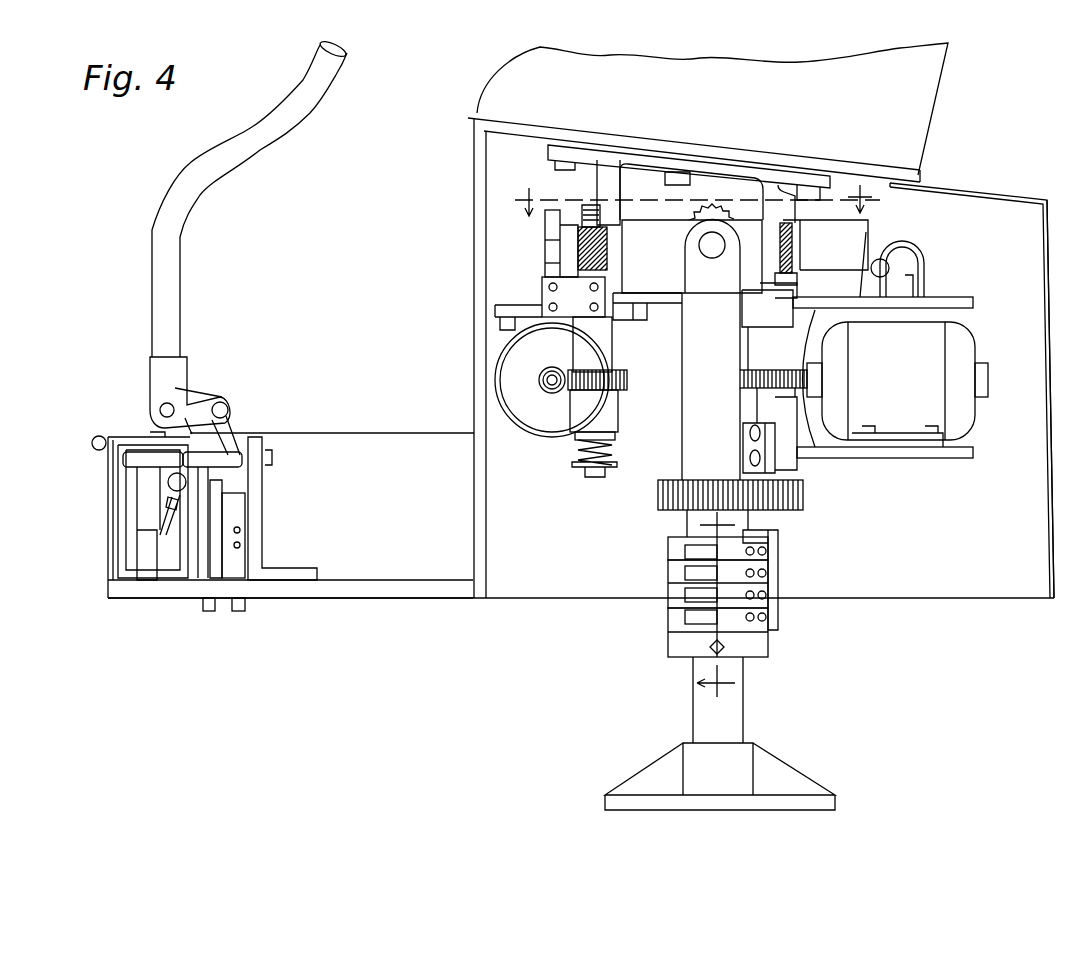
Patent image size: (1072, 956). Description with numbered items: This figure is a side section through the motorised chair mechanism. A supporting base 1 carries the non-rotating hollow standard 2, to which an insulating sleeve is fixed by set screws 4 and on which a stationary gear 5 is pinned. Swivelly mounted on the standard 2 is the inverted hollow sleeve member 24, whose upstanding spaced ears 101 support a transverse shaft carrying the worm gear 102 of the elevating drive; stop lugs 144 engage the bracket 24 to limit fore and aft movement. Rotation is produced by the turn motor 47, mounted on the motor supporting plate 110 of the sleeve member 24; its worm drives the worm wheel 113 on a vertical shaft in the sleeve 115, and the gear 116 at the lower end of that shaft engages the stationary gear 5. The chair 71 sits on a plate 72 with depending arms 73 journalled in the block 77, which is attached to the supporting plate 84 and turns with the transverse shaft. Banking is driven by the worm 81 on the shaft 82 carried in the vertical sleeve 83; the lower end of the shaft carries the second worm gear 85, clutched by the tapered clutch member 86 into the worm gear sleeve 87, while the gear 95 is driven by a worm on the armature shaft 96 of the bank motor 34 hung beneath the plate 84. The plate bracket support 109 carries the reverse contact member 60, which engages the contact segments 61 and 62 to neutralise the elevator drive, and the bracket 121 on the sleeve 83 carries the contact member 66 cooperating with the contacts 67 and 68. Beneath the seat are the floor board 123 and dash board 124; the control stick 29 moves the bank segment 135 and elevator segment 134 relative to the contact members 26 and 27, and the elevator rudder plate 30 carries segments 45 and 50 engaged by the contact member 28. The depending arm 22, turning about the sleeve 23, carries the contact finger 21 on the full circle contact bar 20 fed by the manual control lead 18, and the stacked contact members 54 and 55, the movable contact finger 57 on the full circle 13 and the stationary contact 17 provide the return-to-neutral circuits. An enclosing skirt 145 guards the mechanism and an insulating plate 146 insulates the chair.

The supporting base 1 is at (775, 762).
The standard 2 is at (733, 708).
The set screws 4 is at (710, 647).
The gear 5 is at (658, 495).
The full circle 13 is at (672, 592).
The stationary contact 17 is at (672, 553).
The manual control lead 18 is at (717, 605).
The full circle contact bar 20 is at (672, 617).
The contact finger 21 is at (725, 617).
The depending arm 22 is at (743, 440).
The sleeve 23 is at (800, 462).
The sleeve member 24 is at (672, 420).
The contact member 26 is at (203, 612).
The contact member 27 is at (245, 610).
The contact member 28 is at (170, 488).
The control stick 29 is at (180, 283).
The elevator rudder plate 30 is at (236, 452).
The bank motor 34 is at (548, 430).
The segment 45 is at (153, 460).
The turn motor 47 is at (968, 345).
The segment 50 is at (212, 460).
The contact member 54 is at (725, 552).
The contact member 55 is at (725, 573).
The movable contact finger 57 is at (725, 595).
The reverse contact member 60 is at (897, 270).
The contact segment 61 is at (862, 280).
The contact segment 62 is at (866, 233).
The contact member 66 is at (545, 258).
The contact 67 is at (545, 273).
The contact 68 is at (545, 230).
The chair 71 is at (913, 100).
The plate 72 is at (689, 185).
The depending arms 73 is at (778, 254).
The block 77 is at (692, 256).
The worm 81 is at (568, 226).
The shaft 82 is at (600, 212).
The vertical sleeve 83 is at (612, 348).
The supporting plate 84 is at (652, 298).
The second worm gear 85 is at (627, 380).
The tapered clutch member 86 is at (612, 440).
The worm gear sleeve 87 is at (612, 405).
The gear 95 is at (548, 368).
The armature shaft 96 is at (539, 380).
The upstanding spaced ears 101 is at (700, 268).
The worm gear 102 is at (687, 208).
The plate bracket support 109 is at (950, 302).
The motor supporting plate 110 is at (890, 455).
The worm wheel 113 is at (742, 380).
The sleeve 115 is at (760, 412).
The gear 116 is at (803, 505).
The bracket 121 is at (548, 298).
The floor board 123 is at (387, 582).
The dash board 124 is at (108, 510).
The elevator segment 134 is at (237, 515).
The bank segment 135 is at (210, 498).
The stop lugs 144 is at (705, 326).
The enclosing skirt 145 is at (1050, 388).
The insulating plate 146 is at (800, 165).